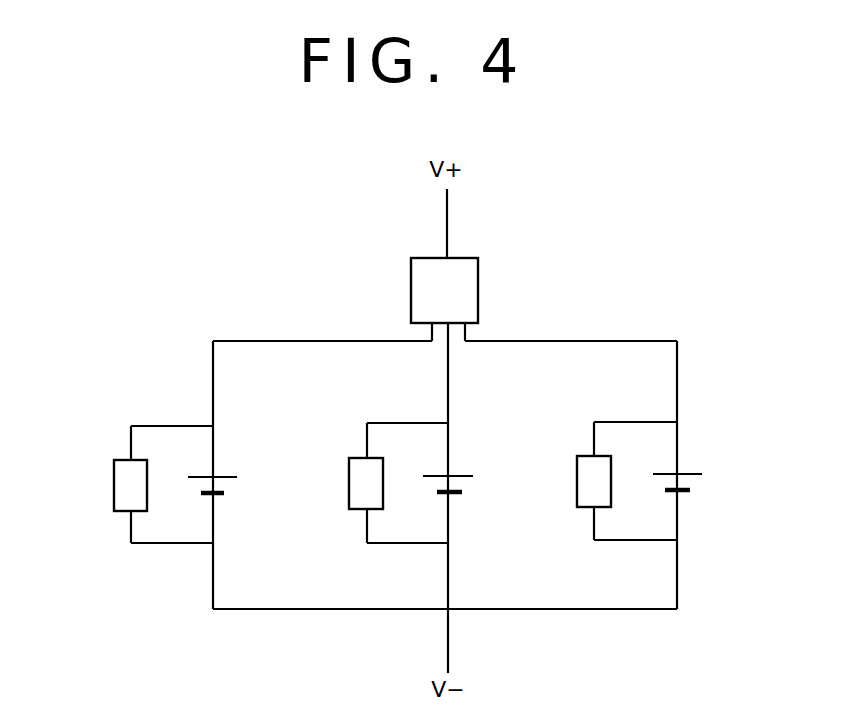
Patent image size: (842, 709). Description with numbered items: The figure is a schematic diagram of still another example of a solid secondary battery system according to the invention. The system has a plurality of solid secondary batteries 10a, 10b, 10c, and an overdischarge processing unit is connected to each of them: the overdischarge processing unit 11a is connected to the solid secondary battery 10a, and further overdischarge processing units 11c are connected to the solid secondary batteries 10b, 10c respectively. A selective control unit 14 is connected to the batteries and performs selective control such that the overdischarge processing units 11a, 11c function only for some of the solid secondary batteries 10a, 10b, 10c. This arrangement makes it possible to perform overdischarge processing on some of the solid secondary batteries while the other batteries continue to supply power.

The selective control unit 14 is at (460, 264).
The solid secondary battery 10a is at (228, 477).
The solid secondary battery 10b is at (462, 476).
The solid secondary battery 10c is at (692, 474).
The overdischarge processing unit 11a is at (121, 493).
The overdischarge processing unit 11c is at (357, 490).